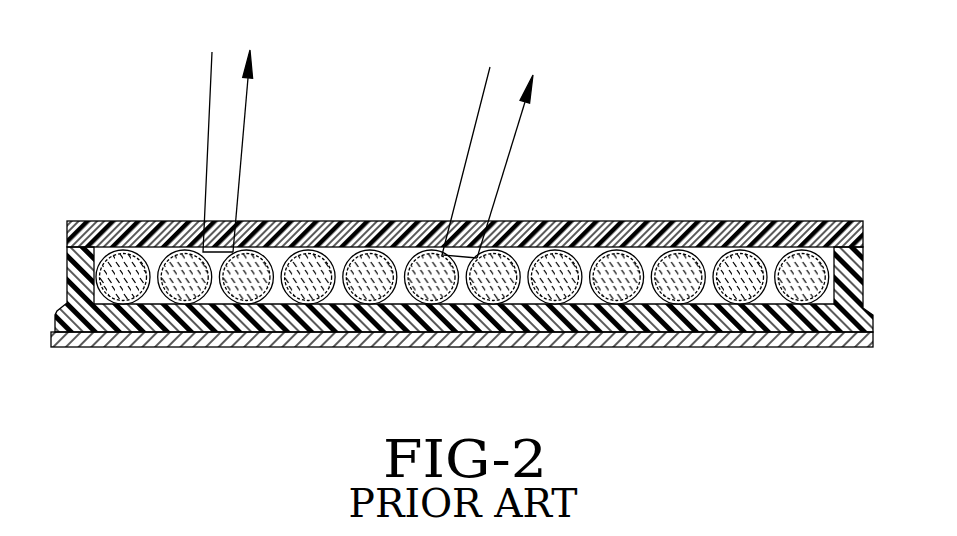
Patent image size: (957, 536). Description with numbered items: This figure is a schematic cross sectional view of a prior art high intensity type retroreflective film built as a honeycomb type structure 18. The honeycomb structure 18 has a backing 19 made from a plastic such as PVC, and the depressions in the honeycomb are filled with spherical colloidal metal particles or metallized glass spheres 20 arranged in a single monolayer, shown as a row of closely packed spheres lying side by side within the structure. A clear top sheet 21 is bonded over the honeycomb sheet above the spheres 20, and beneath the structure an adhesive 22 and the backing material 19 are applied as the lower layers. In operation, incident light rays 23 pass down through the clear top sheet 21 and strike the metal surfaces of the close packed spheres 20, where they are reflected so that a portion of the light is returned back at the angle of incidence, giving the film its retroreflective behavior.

The honeycomb type structure 18 is at (109, 182).
The backing 19 is at (698, 323).
The metallized glass spheres 20 is at (682, 265).
The clear top sheet 21 is at (580, 232).
The adhesive 22 is at (582, 345).
The incident light rays 23 is at (203, 132).